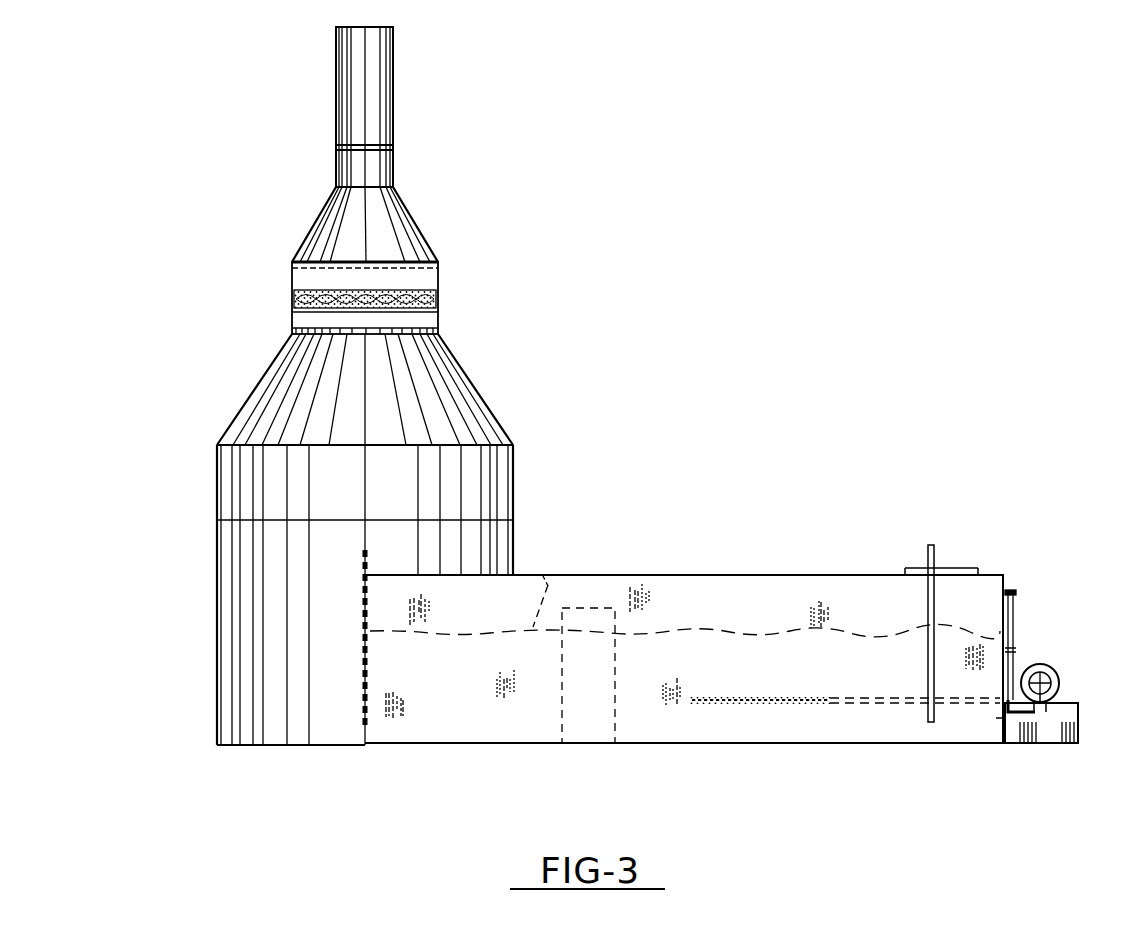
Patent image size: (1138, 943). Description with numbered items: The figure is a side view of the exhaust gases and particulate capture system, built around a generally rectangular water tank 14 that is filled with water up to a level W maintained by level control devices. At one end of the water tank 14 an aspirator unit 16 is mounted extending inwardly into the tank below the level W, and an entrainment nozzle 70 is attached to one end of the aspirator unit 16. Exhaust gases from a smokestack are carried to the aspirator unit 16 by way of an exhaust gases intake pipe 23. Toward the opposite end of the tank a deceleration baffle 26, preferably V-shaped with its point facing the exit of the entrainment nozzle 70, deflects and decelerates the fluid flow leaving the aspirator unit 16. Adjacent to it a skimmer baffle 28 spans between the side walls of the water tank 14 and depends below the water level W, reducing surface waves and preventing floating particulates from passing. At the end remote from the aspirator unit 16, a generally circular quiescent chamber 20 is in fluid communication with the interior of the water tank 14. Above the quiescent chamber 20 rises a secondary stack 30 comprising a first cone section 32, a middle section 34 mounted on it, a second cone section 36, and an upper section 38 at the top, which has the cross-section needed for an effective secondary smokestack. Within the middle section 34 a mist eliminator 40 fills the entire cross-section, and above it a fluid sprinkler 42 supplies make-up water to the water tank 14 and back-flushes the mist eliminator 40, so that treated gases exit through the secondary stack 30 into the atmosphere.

The water tank 14 is at (680, 595).
The aspirator unit 16 is at (903, 684).
The quiescent chamber 20 is at (250, 597).
The exhaust gases intake pipe 23 is at (1015, 618).
The deceleration baffle 26 is at (563, 698).
The skimmer baffle 28 is at (543, 575).
The secondary stack 30 is at (196, 326).
The first cone section 32 is at (265, 420).
The middle section 34 is at (422, 280).
The second cone section 36 is at (400, 222).
The upper section 38 is at (350, 83).
The mist eliminator 40 is at (422, 312).
The fluid sprinkler 42 is at (440, 264).
The entrainment nozzle 70 is at (858, 705).
The water level W is at (742, 633).